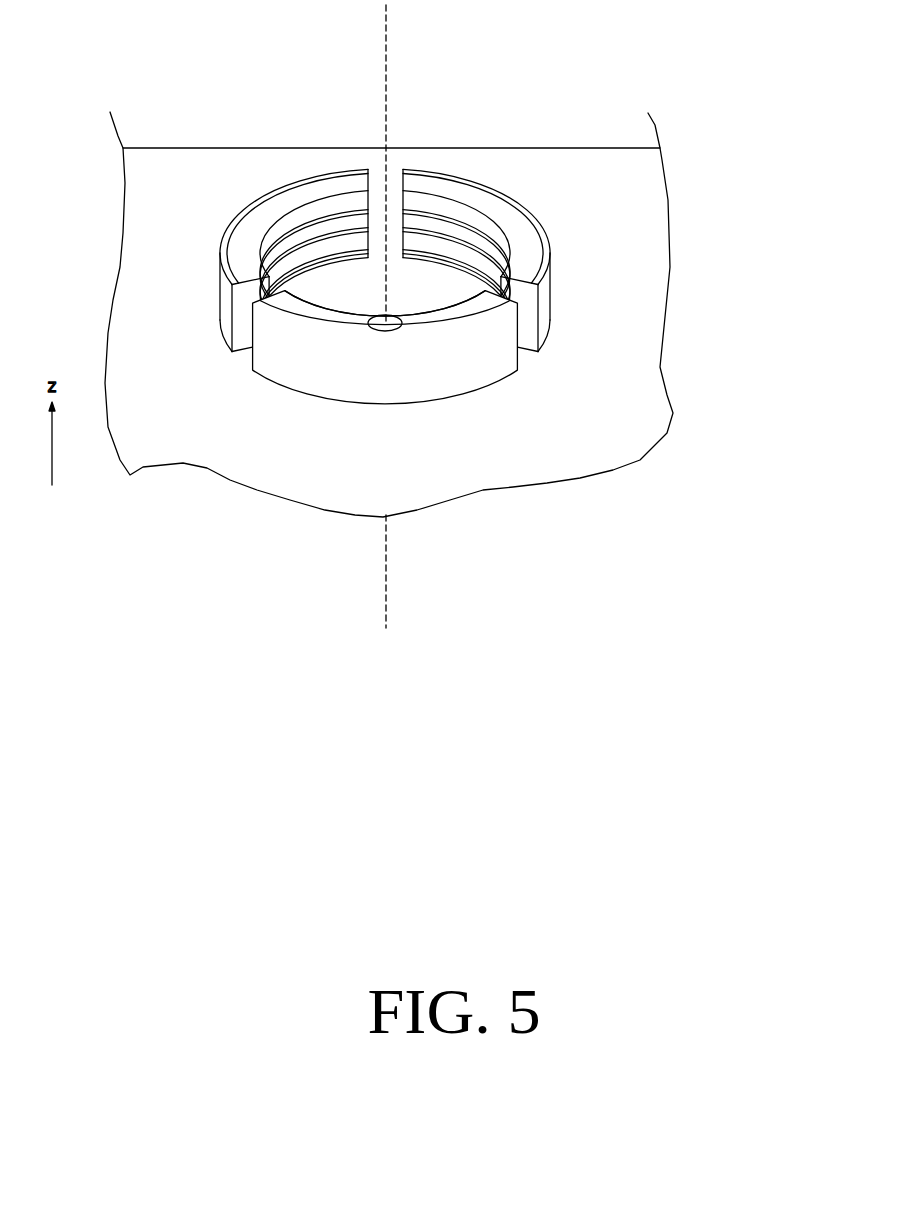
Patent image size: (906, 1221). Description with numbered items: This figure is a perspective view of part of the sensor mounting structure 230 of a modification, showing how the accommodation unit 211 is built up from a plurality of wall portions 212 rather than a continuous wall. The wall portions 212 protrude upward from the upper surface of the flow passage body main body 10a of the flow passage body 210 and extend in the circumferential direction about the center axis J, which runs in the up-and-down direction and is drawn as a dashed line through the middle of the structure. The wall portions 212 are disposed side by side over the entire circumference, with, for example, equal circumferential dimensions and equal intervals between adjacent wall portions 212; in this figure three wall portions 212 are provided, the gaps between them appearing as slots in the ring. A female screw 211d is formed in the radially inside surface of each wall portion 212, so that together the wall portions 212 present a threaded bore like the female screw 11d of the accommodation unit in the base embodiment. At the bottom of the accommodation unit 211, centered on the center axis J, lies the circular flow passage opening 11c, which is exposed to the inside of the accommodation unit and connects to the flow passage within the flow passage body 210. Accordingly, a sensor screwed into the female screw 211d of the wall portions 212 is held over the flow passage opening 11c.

The flow passage body 210 is at (384, 305).
The accommodation unit 211 is at (537, 183).
The female screw 211d is at (293, 222).
The wall portion 212 is at (329, 196).
The flow passage body main body 10a is at (623, 180).
The sensor mounting structure 230 is at (610, 247).
The flow passage opening 11c is at (404, 332).
The female screw 11d is at (357, 286).
The center axis J is at (388, 27).